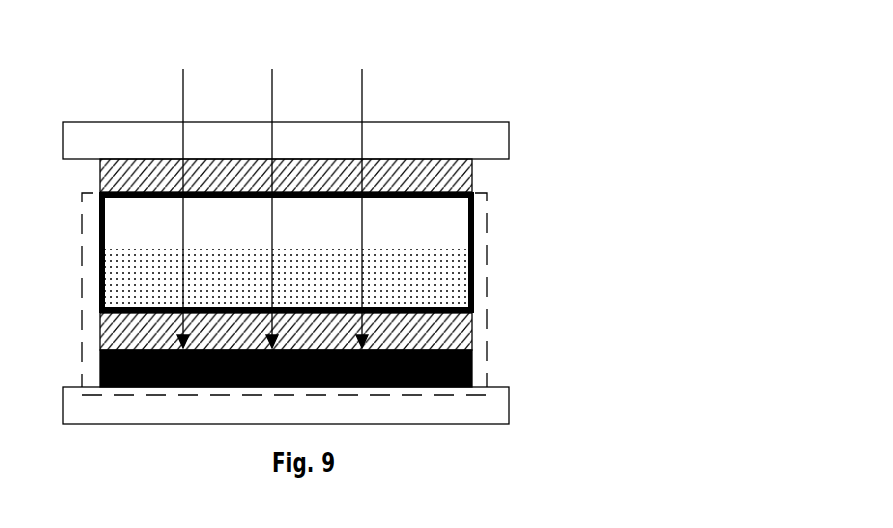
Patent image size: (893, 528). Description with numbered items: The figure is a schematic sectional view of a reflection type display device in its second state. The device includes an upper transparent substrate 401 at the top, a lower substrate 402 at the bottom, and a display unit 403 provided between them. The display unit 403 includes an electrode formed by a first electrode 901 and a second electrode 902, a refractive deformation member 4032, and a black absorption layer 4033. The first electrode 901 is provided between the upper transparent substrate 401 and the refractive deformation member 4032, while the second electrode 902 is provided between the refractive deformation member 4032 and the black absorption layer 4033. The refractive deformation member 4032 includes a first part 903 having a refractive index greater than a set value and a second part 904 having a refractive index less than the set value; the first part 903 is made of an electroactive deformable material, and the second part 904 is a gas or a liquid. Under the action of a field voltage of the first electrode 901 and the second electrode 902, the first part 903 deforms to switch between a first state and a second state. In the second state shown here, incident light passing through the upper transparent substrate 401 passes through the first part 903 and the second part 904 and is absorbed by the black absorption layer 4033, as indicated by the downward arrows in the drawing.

The upper transparent substrate 401 is at (312, 112).
The lower substrate 402 is at (324, 379).
The display unit 403 is at (317, 294).
The refractive deformation member 4032 is at (65, 252).
The black absorption layer 4033 is at (326, 342).
The first electrode 901 is at (286, 141).
The second electrode 902 is at (252, 314).
The first part 903 is at (331, 241).
The second part 904 is at (332, 265).